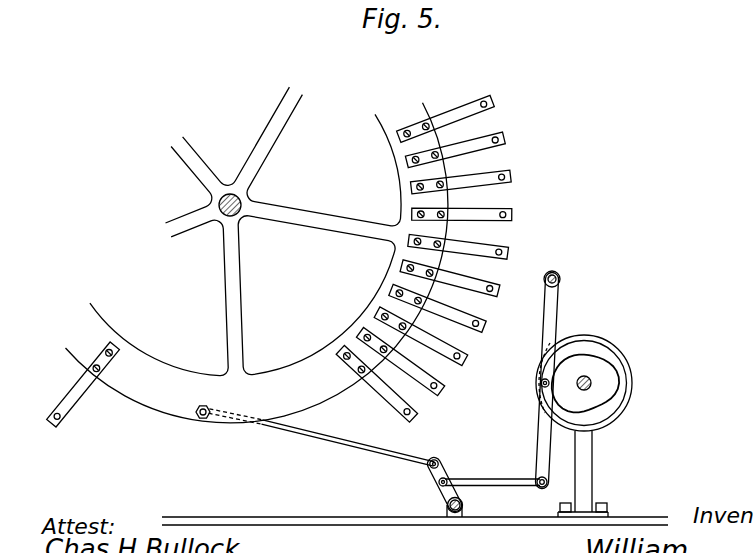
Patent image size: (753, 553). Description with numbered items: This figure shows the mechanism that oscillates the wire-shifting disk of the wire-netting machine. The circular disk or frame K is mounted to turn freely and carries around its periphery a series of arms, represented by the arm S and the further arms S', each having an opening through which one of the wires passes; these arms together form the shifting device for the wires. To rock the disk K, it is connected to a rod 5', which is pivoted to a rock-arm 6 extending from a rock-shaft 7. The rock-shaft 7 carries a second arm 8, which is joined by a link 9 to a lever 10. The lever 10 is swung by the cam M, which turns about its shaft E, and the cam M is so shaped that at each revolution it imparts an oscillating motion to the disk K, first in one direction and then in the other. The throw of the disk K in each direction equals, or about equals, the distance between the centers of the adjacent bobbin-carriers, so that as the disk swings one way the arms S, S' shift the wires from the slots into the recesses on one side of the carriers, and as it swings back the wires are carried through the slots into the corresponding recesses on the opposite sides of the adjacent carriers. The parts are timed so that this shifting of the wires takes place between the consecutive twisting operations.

The circular disk or frame K is at (257, 255).
The arm S is at (83, 384).
The arm S' is at (424, 258).
The rod 5' is at (315, 436).
The rock-arm 6 is at (443, 463).
The rock-shaft 7 is at (463, 508).
The second arm 8 is at (440, 492).
The link 9 is at (506, 478).
The lever 10 is at (542, 339).
The cam shaft E is at (587, 376).
The cam M is at (627, 374).